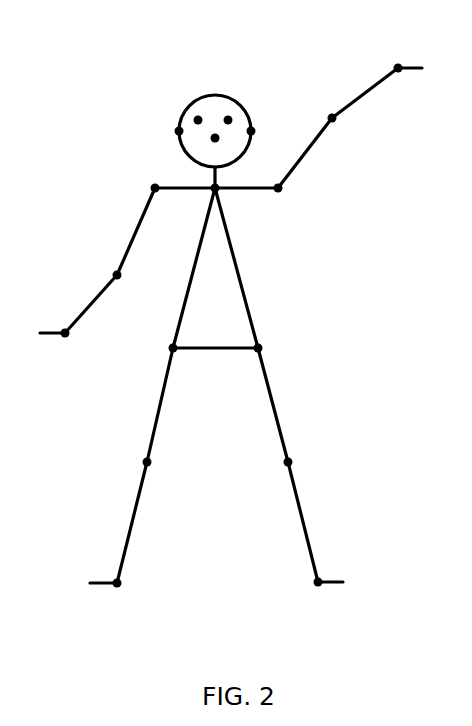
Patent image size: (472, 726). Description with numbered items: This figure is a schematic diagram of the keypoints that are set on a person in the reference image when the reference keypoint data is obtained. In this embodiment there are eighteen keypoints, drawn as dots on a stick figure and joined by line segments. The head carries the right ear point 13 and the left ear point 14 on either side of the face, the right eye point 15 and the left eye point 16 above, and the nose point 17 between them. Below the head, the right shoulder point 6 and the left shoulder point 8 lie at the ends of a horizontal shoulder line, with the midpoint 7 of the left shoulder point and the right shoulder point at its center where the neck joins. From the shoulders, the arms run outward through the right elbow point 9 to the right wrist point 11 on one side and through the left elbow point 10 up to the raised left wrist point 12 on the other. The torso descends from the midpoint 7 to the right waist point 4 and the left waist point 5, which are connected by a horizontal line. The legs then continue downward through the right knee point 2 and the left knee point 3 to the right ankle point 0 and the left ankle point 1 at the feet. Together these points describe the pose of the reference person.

The right ankle point 0 is at (115, 525).
The left ankle point 1 is at (321, 524).
The right knee point 2 is at (139, 411).
The left knee point 3 is at (294, 411).
The right waist point 4 is at (176, 274).
The left waist point 5 is at (256, 274).
The right shoulder point 6 is at (166, 185).
The midpoint of left shoulder point and right shoulder point 7 is at (199, 201).
The left shoulder point 8 is at (254, 201).
The right elbow point 9 is at (116, 236).
The left elbow point 10 is at (329, 151).
The right wrist point 11 is at (74, 322).
The left wrist point 12 is at (377, 80).
The right ear point 13 is at (159, 143).
The left ear point 14 is at (272, 143).
The right eye point 15 is at (175, 104).
The left eye point 16 is at (252, 104).
The nose point 17 is at (218, 151).